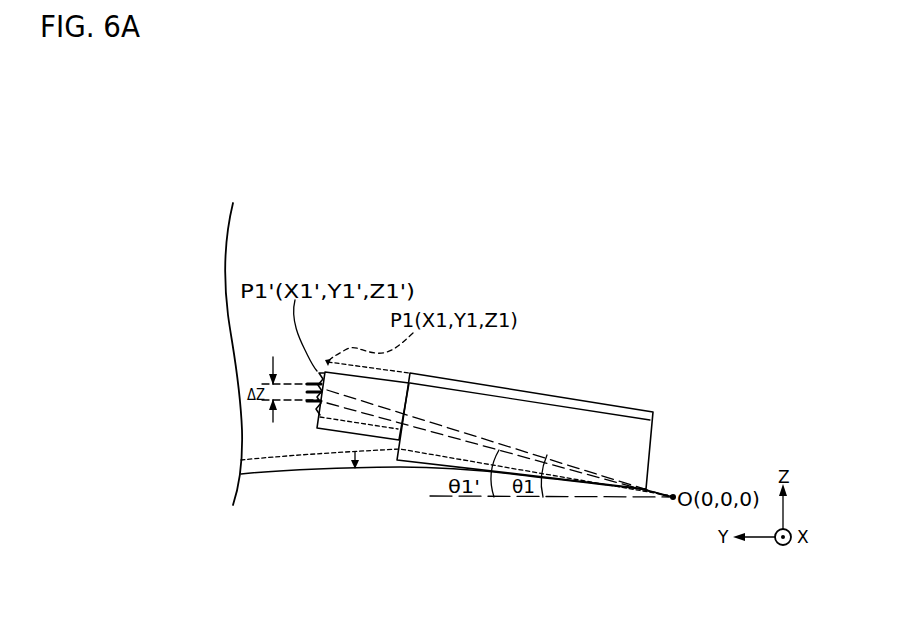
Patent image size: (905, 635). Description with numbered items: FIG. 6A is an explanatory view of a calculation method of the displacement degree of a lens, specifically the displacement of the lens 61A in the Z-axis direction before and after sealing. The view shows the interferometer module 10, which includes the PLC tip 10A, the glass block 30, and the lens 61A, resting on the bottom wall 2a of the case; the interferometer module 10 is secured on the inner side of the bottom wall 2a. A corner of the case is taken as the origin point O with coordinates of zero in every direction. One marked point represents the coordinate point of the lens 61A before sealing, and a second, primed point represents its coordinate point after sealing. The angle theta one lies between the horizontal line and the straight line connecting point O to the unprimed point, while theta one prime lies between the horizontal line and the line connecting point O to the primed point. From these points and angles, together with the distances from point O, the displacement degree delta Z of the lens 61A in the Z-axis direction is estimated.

The lens 61A is at (308, 406).
The glass block 30 is at (327, 432).
The PLC tip 10A is at (560, 420).
The bottom wall 2a is at (390, 474).
The interferometer module 10 is at (431, 453).